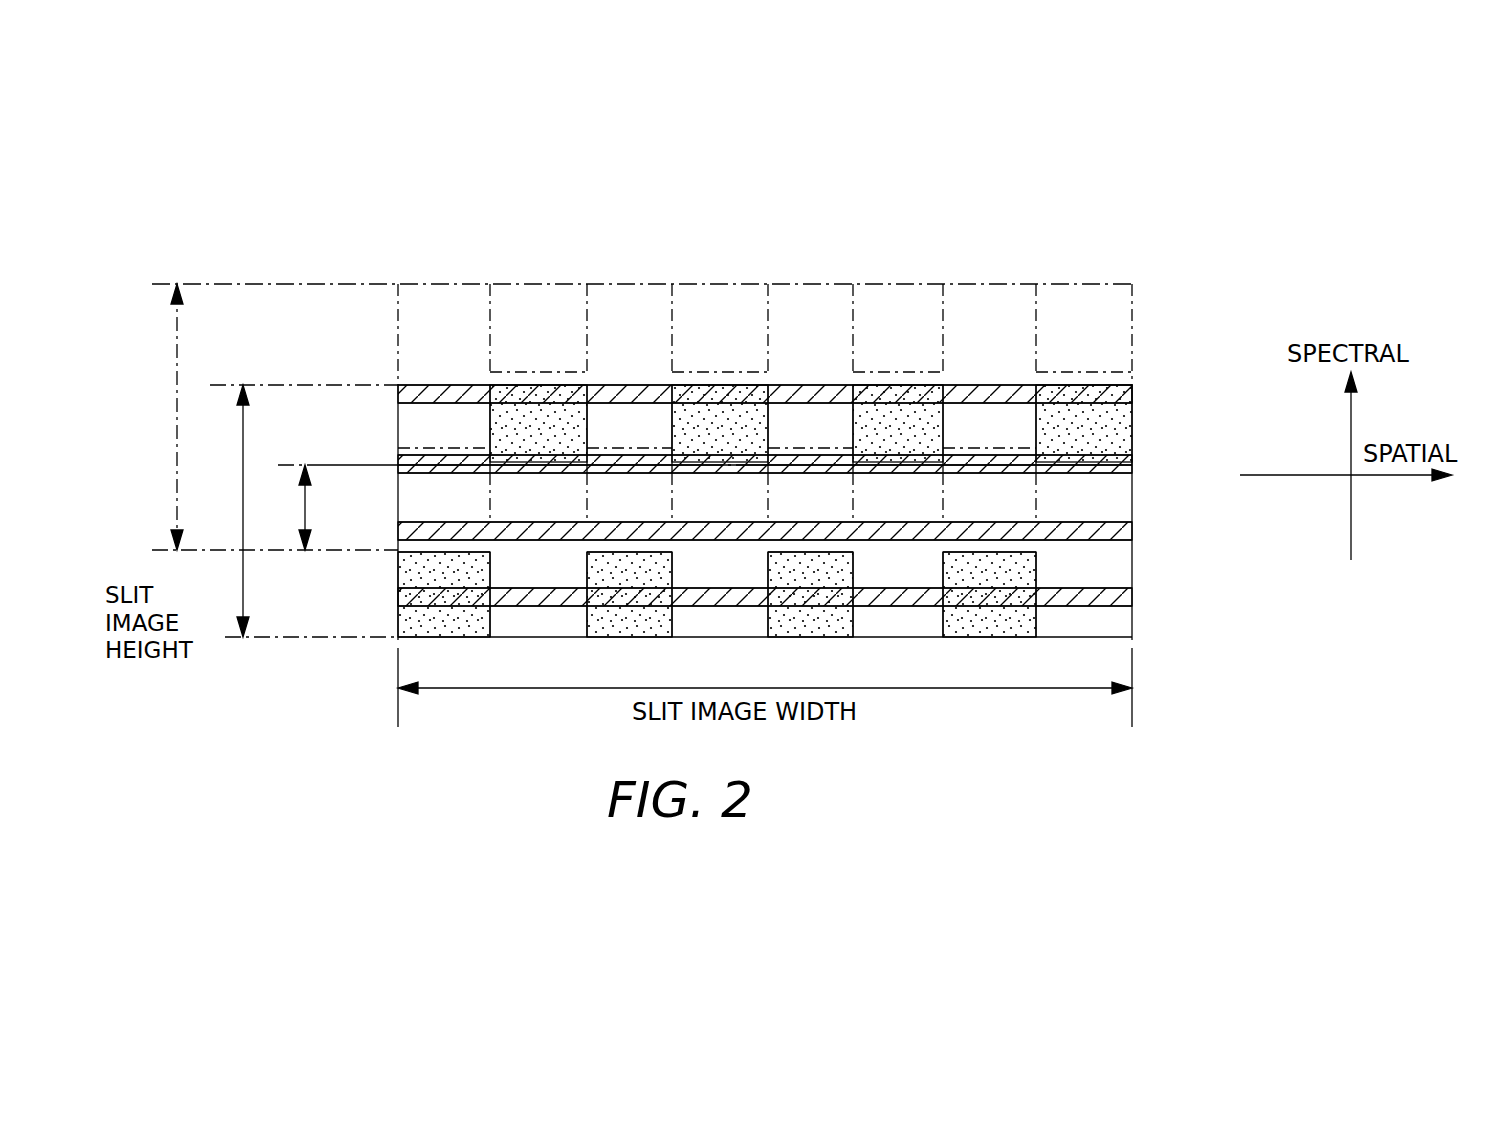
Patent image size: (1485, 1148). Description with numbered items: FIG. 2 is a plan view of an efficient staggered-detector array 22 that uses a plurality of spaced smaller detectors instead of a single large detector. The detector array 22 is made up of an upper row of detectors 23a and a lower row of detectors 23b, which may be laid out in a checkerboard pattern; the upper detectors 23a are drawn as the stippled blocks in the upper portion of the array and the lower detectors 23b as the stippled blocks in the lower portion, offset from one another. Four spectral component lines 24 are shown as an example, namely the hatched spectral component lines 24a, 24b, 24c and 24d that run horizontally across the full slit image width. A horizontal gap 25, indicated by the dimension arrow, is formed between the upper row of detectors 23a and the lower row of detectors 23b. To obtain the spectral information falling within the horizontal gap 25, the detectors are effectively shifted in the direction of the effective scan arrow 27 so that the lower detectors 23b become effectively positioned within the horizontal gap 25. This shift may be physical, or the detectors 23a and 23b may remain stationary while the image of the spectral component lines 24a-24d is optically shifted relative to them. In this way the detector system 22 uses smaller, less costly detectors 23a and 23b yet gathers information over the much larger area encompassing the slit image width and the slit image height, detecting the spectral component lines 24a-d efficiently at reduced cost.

The staggered-detector array 22 is at (983, 248).
The upper row of detectors 23a is at (530, 282).
The lower row of detectors 23b is at (455, 496).
The spectral component lines 24 is at (814, 499).
The first spectral component line 24a is at (1012, 402).
The second spectral component line 24b is at (1113, 468).
The third spectral component line 24c is at (1118, 534).
The fourth spectral component line 24d is at (1118, 593).
The horizontal gap 25 is at (306, 504).
The effective scan arrow 27 is at (178, 381).